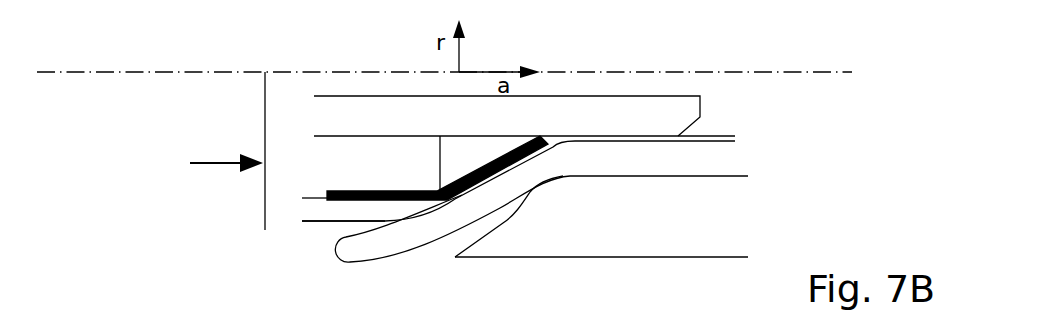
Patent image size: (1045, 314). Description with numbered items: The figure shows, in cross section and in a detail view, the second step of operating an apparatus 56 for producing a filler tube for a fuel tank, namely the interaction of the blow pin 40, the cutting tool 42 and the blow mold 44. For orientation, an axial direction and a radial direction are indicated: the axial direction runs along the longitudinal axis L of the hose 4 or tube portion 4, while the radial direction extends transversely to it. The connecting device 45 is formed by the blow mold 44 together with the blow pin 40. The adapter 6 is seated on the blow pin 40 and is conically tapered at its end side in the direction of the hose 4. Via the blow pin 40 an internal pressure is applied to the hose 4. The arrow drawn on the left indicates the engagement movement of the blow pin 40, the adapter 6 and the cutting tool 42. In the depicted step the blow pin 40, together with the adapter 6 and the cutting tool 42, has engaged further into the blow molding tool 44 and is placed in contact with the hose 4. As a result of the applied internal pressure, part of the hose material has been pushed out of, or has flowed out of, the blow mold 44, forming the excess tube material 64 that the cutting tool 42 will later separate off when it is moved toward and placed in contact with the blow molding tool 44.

The apparatus 56 is at (128, 56).
The connecting device 45 is at (658, 70).
The longitudinal axis L is at (750, 75).
The blow pin 40 is at (393, 169).
The hose 4 is at (716, 169).
The adapter 6 is at (410, 202).
The cutting tool 42 is at (325, 207).
The excess tube material 64 is at (358, 245).
The blow mold 44 is at (635, 234).